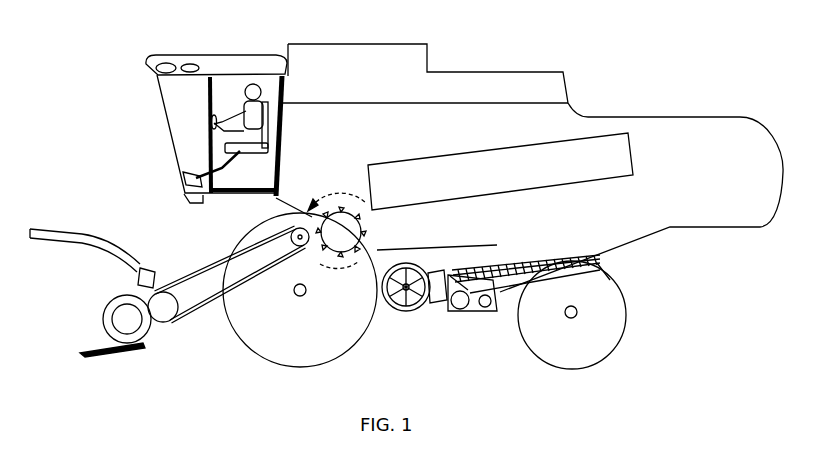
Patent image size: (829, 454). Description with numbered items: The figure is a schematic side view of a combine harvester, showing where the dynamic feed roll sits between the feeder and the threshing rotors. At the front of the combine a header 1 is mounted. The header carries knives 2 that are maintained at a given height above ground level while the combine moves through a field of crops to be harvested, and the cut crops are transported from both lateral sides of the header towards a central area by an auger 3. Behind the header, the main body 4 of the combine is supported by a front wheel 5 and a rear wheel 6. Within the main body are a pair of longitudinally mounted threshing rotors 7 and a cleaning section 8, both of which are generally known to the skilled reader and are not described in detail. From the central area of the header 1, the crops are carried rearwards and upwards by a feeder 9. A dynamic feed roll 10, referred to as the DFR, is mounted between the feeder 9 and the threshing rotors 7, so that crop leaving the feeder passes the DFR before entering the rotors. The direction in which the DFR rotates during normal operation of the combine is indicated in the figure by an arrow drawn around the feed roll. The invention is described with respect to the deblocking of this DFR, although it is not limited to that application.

The header 1 is at (83, 270).
The knives 2 is at (75, 343).
The auger 3 is at (130, 322).
The main body 4 is at (675, 138).
The front wheel 5 is at (306, 333).
The rear wheel 6 is at (568, 350).
The threshing rotors 7 is at (463, 165).
The cleaning section 8 is at (523, 243).
The feeder 9 is at (200, 278).
The dynamic feed roll 10 is at (342, 222).